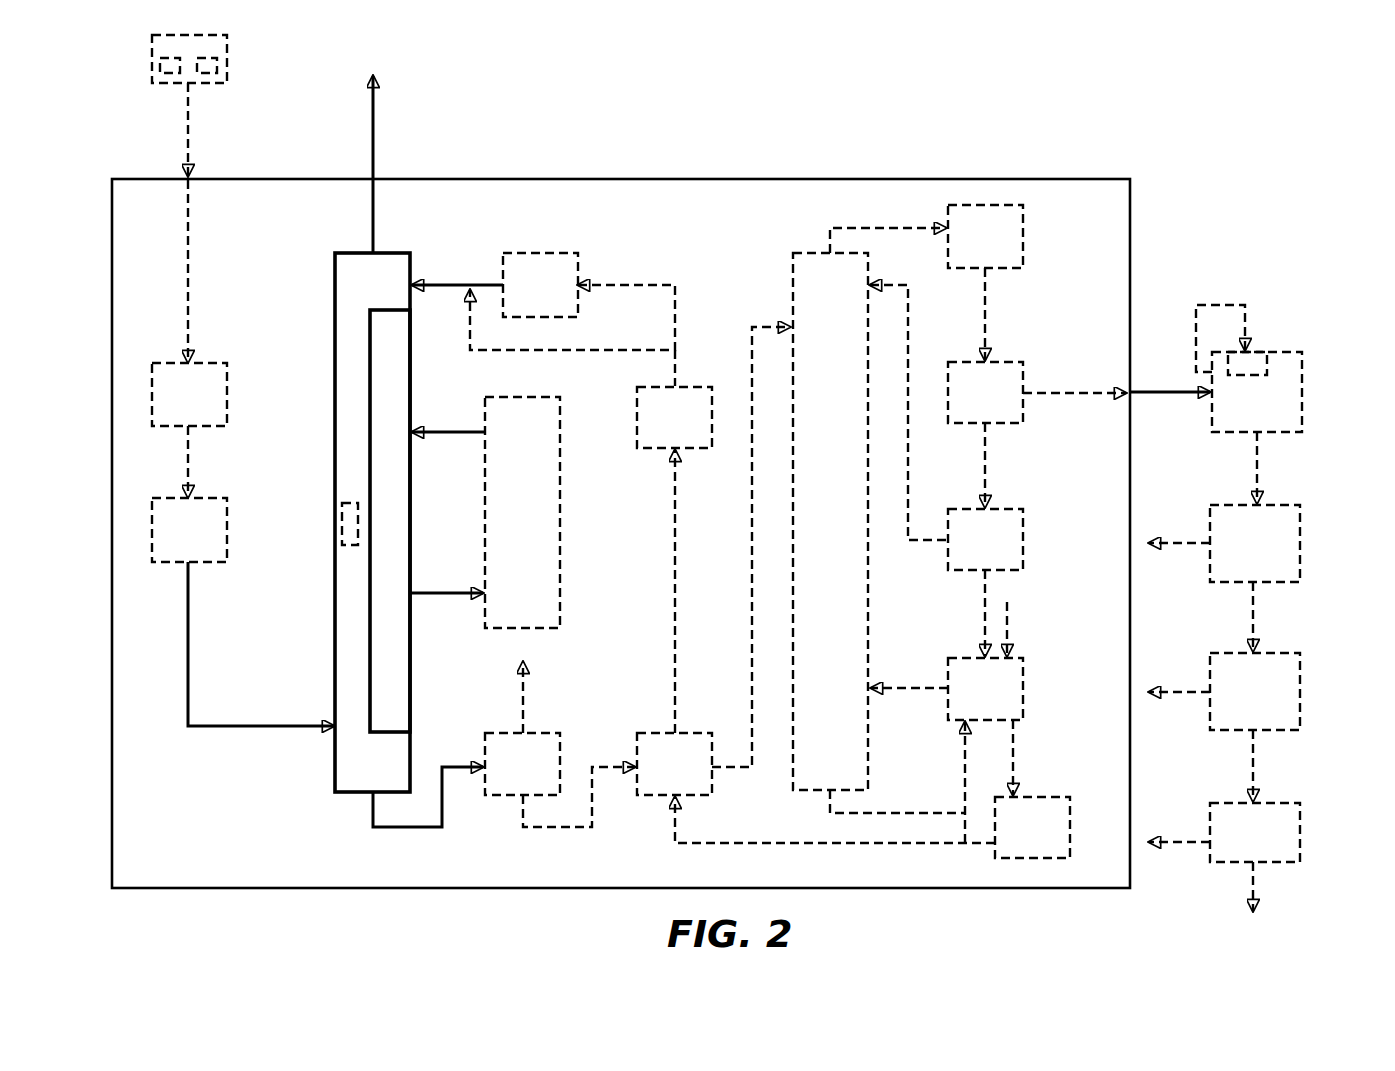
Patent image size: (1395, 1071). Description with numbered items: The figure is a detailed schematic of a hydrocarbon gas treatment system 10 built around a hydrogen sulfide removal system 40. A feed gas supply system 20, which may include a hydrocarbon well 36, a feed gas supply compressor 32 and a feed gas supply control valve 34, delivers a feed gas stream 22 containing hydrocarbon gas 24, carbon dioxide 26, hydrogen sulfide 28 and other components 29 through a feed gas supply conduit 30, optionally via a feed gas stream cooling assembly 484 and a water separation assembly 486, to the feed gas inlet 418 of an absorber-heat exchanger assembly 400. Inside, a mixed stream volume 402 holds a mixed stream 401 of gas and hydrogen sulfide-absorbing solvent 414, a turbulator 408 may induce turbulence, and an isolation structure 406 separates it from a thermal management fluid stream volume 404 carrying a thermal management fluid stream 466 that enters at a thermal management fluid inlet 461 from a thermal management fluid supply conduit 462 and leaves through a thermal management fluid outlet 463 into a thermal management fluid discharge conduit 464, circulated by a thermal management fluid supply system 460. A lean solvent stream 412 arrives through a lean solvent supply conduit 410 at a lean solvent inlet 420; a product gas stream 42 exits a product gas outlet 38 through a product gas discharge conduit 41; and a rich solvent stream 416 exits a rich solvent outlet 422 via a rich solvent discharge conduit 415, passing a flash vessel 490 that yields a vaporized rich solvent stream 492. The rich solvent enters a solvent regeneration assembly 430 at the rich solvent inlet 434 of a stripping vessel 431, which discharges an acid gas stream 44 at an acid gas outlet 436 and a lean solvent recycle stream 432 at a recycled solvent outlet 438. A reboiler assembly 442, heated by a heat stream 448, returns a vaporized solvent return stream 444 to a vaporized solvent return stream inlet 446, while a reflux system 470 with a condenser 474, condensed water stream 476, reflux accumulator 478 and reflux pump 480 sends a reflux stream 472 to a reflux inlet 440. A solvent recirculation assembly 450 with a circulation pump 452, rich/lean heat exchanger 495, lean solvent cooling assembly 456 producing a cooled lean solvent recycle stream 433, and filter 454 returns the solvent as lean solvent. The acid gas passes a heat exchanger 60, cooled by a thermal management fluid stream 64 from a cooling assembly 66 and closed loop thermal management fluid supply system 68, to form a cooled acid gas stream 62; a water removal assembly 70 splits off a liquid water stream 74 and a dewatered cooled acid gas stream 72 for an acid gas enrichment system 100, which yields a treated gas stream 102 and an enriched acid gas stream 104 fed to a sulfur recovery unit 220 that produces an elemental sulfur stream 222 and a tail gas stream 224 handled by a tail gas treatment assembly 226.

The hydrocarbon gas treatment system 10 is at (1240, 98).
The feed gas supply system 20 is at (231, 46).
The feed gas stream 22 is at (183, 104).
The hydrocarbon gas 24 is at (195, 103).
The carbon dioxide 26 is at (195, 120).
The hydrogen sulfide 28 is at (195, 140).
The other components 29 is at (185, 140).
The feed gas supply conduit 30 is at (160, 118).
The feed gas supply compressor 32 is at (158, 65).
The feed gas supply control valve 34 is at (220, 70).
The hydrocarbon well 36 is at (152, 38).
The product gas outlet 38 is at (362, 246).
The hydrogen sulfide removal system 40 is at (993, 176).
The product gas discharge conduit 41 is at (366, 197).
The product gas stream 42 is at (380, 130).
The acid gas stream 44 is at (822, 236).
The heat exchanger 60 is at (1306, 365).
The cooled acid gas stream 62 is at (1262, 460).
The thermal management fluid stream 64 is at (1212, 300).
The cooling assembly 66 is at (1244, 378).
The closed loop thermal management fluid supply system 68 is at (1236, 293).
The water removal assembly 70 is at (1304, 530).
The dewatered cooled acid gas stream 72 is at (1258, 610).
The liquid water stream 74 is at (1186, 528).
The acid gas enrichment system 100 is at (1304, 683).
The treated gas stream 102 is at (1174, 684).
The enriched acid gas stream 104 is at (1249, 774).
The sulfur recovery unit 220 is at (1304, 817).
The elemental sulfur stream 222 is at (1258, 885).
The tail gas stream 224 is at (1188, 848).
The tail gas treatment assembly 226 is at (1290, 838).
The absorber-heat exchanger (ABHEX) assembly 400 is at (331, 316).
The mixed stream 401 is at (340, 428).
The mixed stream volume 402 is at (340, 396).
The thermal management fluid stream volume 404 is at (403, 665).
The isolation structure 406 is at (368, 642).
The turbulator 408 is at (340, 528).
The lean solvent supply conduit 410 is at (442, 273).
The lean solvent stream 412 is at (462, 282).
The hydrogen sulfide-absorbing solvent 414 is at (438, 290).
The rich solvent discharge conduit 415 is at (402, 840).
The rich solvent stream 416 is at (442, 834).
The feed gas inlet 418 is at (330, 722).
The lean solvent inlet 420 is at (414, 280).
The rich solvent outlet 422 is at (365, 800).
The solvent regeneration assembly 430 is at (790, 290).
The stripping vessel 431 is at (871, 582).
The lean solvent recycle stream 432 is at (682, 664).
The cooled lean solvent recycle stream 433 is at (669, 372).
The rich solvent inlet 434 is at (790, 320).
The acid gas outlet 436 is at (830, 250).
The recycled solvent outlet 438 is at (826, 802).
The reflux inlet 440 is at (871, 284).
The reboiler assembly 442 is at (1027, 690).
The vaporized solvent return stream 444 is at (915, 684).
The vaporized solvent return stream inlet 446 is at (873, 696).
The heat stream 448 is at (1010, 605).
The solvent recirculation assembly 450 is at (637, 270).
The circulation pump 452 is at (1073, 827).
The filter 454 is at (527, 252).
The lean solvent cooling assembly 456 is at (692, 382).
The thermal management fluid supply system 460 is at (567, 527).
The thermal management fluid inlet 461 is at (414, 440).
The thermal management fluid supply conduit 462 is at (470, 428).
The thermal management fluid outlet 463 is at (416, 588).
The thermal management fluid discharge conduit 464 is at (462, 600).
The thermal management fluid stream 466 is at (435, 431).
The reflux system 470 is at (940, 210).
The reflux stream 472 is at (910, 340).
The condenser 474 is at (1027, 238).
The condensed water stream 476 is at (988, 293).
The reflux accumulator 478 is at (1027, 406).
The reflux pump 480 is at (1027, 540).
The feed gas stream cooling assembly 484 is at (231, 376).
The water separation assembly 486 is at (231, 515).
The flash vessel 490 is at (480, 745).
The vaporized rich solvent stream 492 is at (528, 698).
The rich/lean heat exchanger 495 is at (632, 746).